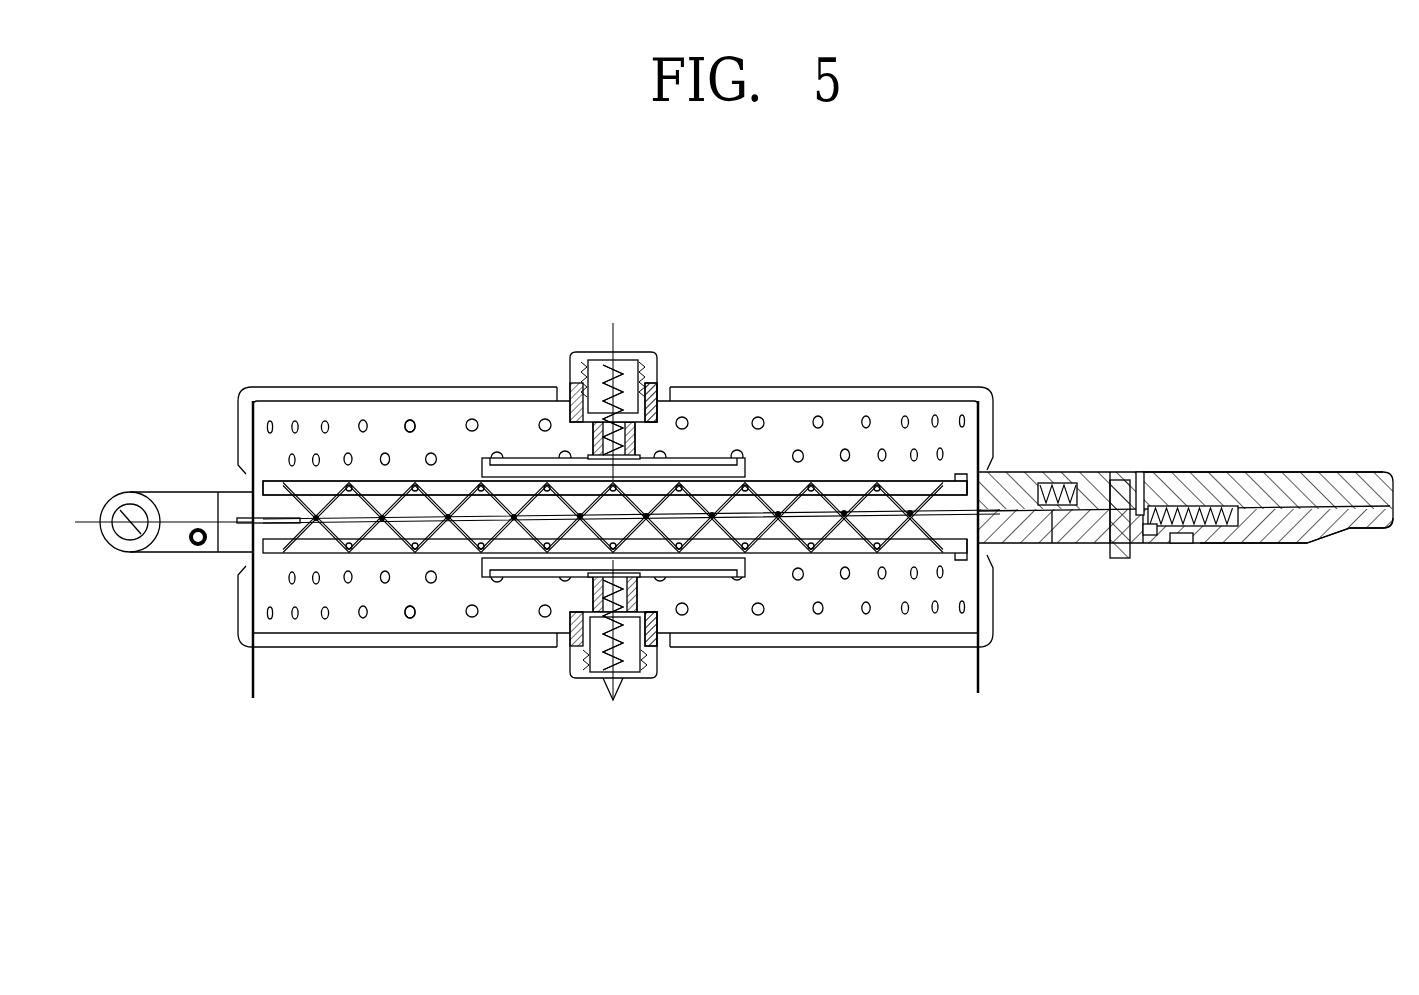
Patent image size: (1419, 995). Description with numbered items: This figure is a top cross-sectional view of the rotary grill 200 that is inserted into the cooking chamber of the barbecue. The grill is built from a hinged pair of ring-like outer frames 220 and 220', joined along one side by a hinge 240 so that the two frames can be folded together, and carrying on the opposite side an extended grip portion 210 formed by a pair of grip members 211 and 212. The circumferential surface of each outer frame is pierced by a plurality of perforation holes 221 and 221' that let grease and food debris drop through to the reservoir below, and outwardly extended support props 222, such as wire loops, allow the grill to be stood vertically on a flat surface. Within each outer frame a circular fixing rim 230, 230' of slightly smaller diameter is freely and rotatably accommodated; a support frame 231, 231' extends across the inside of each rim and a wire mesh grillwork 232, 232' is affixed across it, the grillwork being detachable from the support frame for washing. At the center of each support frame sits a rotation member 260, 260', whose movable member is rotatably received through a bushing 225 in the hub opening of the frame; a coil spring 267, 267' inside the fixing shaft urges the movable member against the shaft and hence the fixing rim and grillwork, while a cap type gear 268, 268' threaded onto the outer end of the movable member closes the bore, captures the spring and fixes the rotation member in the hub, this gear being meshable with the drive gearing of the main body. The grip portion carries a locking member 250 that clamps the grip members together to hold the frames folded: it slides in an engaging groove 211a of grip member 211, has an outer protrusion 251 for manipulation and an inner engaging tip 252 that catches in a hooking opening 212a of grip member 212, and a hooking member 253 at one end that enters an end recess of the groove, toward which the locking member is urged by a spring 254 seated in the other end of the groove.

The rotary grill 200 is at (755, 326).
The grip portion 210 is at (1288, 464).
The grip member 211 is at (1342, 530).
The engaging groove 211a is at (1223, 545).
The grip member 212 is at (1340, 478).
The hooking opening 212a is at (1111, 473).
The outer frame 220 is at (615, 555).
The outer frame 220' is at (752, 344).
The perforation holes 221 is at (407, 662).
The perforation holes 221' is at (440, 366).
The support props 222 is at (253, 675).
The bushing 225 is at (572, 645).
The fixing rim 230 is at (631, 595).
The fixing rim 230' is at (615, 400).
The support frame 231 is at (611, 637).
The support frame 231' is at (613, 398).
The wire mesh grillwork 232 is at (940, 553).
The wire mesh grillwork 232' is at (976, 432).
The hinge 240 is at (123, 553).
The locking member 250 is at (1148, 546).
The protrusion 251 is at (1118, 560).
The engaging tip 252 is at (1131, 473).
The hooking member 253 is at (1077, 548).
The spring 254 is at (1211, 503).
The rotation member 260 is at (619, 657).
The rotation member 260' is at (629, 360).
The coil spring 267 is at (583, 667).
The coil spring 267' is at (587, 347).
The cap type gear 268 is at (687, 681).
The cap type gear 268' is at (689, 350).